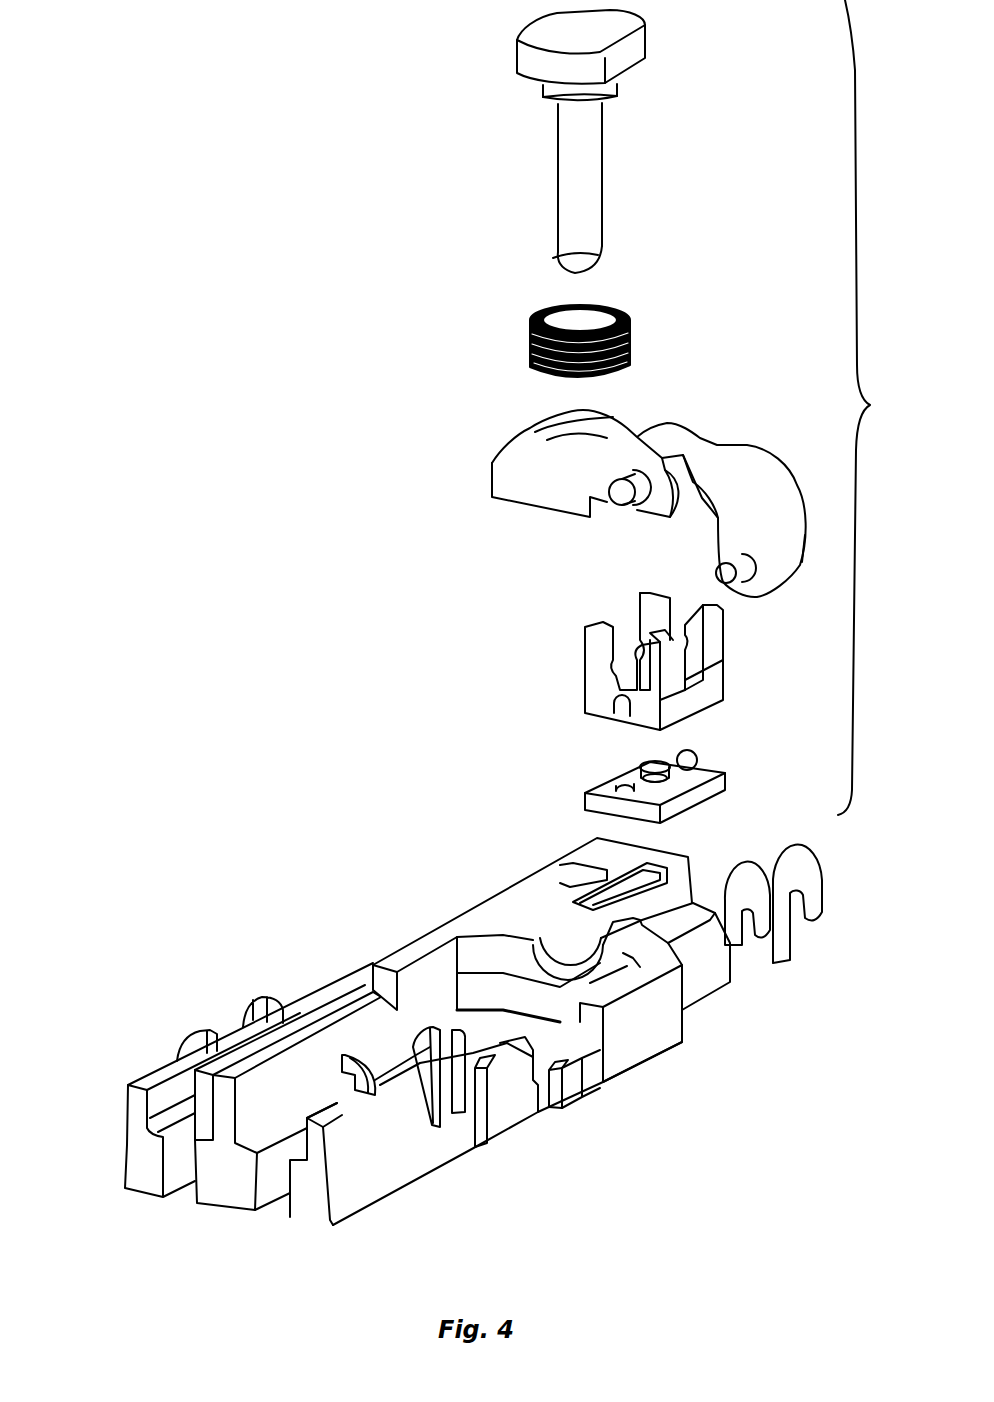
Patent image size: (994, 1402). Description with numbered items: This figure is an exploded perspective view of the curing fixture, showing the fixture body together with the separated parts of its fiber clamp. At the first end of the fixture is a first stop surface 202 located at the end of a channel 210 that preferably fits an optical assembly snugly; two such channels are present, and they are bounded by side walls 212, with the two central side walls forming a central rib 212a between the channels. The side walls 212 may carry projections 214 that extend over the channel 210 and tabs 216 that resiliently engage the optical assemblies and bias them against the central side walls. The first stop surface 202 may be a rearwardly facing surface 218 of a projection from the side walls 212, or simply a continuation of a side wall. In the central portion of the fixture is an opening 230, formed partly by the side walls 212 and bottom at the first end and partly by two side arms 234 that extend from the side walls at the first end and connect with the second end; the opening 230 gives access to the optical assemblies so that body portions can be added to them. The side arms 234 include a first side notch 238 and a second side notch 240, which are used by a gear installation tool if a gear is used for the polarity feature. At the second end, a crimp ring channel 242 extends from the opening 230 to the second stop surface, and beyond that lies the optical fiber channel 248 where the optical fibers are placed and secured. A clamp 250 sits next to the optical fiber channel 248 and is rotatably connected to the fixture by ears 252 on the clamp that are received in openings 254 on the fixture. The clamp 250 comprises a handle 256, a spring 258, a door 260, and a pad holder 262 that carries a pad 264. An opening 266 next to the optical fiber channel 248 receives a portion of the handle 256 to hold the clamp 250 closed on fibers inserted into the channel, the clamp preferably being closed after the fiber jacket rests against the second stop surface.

The first stop surface 202 is at (290, 1118).
The channel 210 is at (185, 1195).
The side walls 212 is at (127, 1131).
The central rib 212a is at (128, 1085).
The projections 214 is at (186, 1046).
The tabs 216 is at (240, 1014).
The surface 218 is at (292, 1162).
The opening 230 is at (567, 1031).
The side arms 234 is at (372, 963).
The first side notch 238 is at (588, 1074).
The second side notch 240 is at (546, 1110).
The crimp ring channel 242 is at (555, 937).
The optical fiber channel 248 is at (697, 875).
The clamp 250 is at (867, 407).
The ears 252 is at (748, 588).
The openings 254 is at (785, 918).
The handle 256 is at (602, 172).
The spring 258 is at (632, 347).
The door 260 is at (718, 443).
The pad holder 262 is at (727, 678).
The pad 264 is at (727, 778).
The opening 266 is at (540, 878).